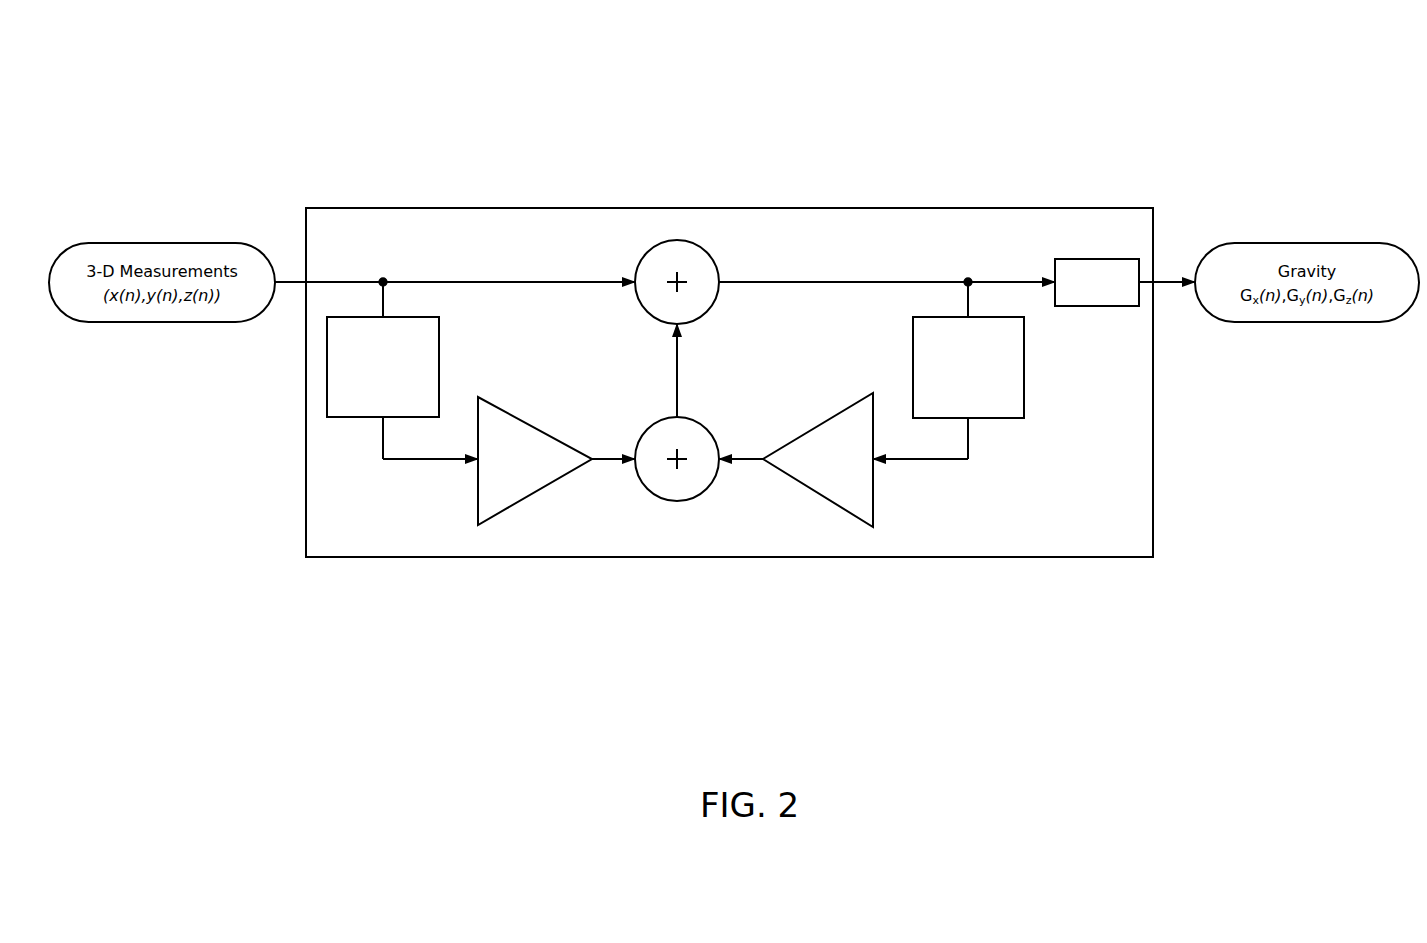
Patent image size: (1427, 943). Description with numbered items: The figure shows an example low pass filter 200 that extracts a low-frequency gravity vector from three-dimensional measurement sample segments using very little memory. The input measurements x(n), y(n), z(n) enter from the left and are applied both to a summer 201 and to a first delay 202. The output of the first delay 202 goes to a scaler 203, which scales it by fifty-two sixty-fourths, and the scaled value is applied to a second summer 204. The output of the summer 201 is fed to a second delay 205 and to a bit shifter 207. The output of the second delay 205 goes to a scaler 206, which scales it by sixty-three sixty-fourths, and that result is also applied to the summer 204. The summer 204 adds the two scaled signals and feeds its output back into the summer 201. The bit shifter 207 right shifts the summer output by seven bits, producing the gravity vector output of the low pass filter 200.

The low pass filter 200 is at (413, 112).
The summer 201 is at (718, 263).
The first delay 202 is at (442, 352).
The scaler 203 is at (540, 428).
The summer 204 is at (708, 427).
The second delay 205 is at (1027, 358).
The scaler 206 is at (812, 493).
The bit shifter 207 is at (1067, 257).